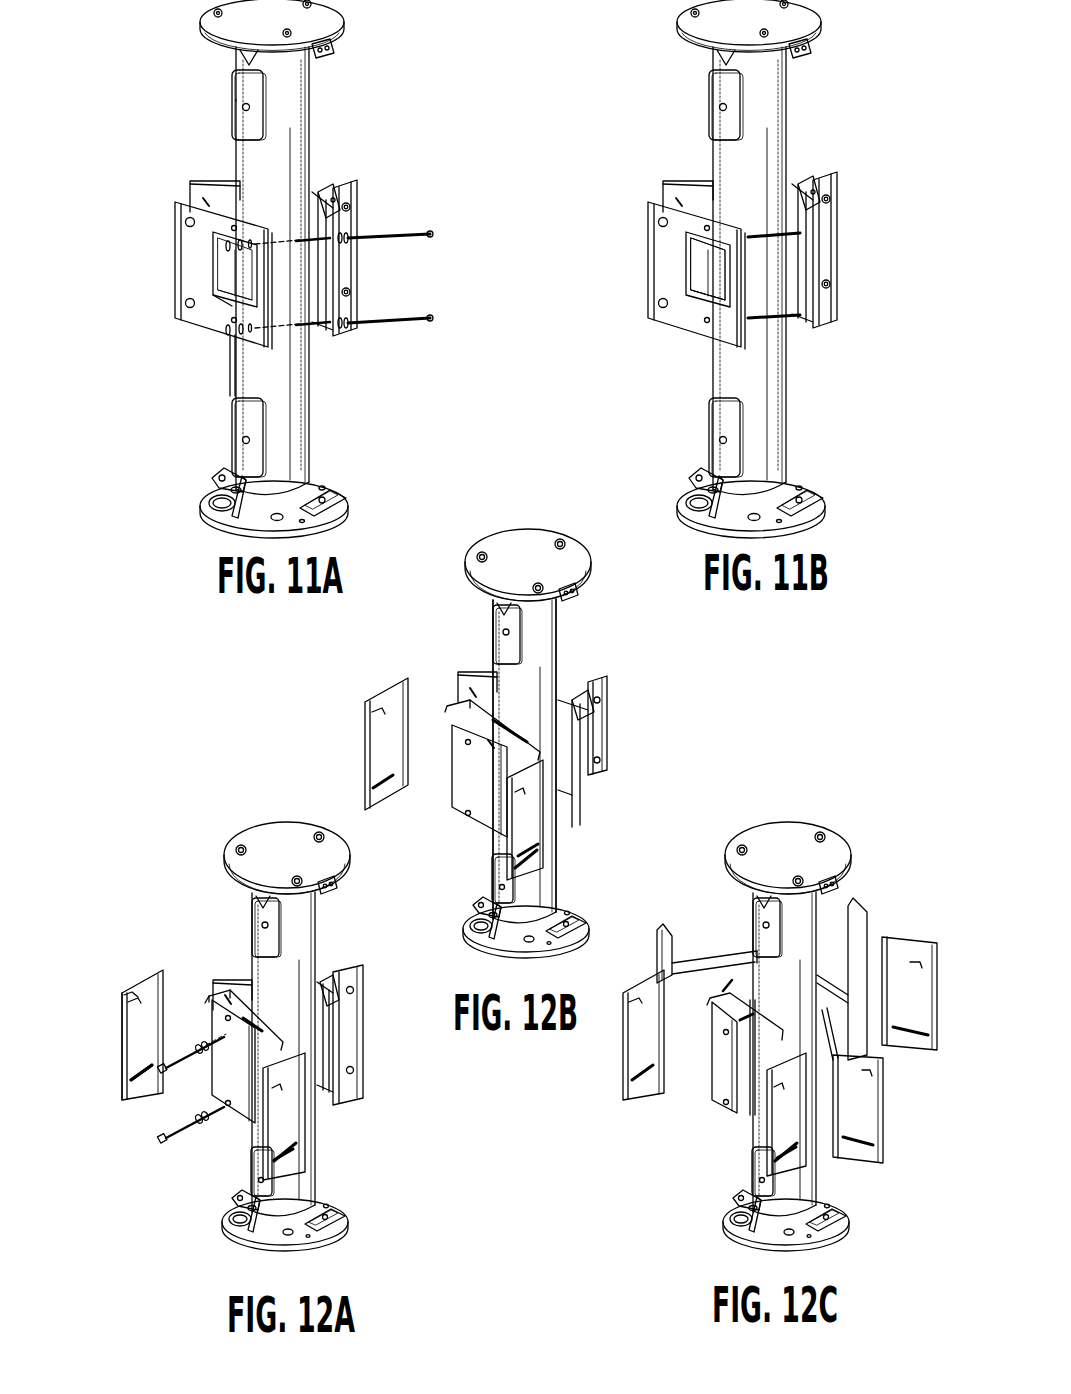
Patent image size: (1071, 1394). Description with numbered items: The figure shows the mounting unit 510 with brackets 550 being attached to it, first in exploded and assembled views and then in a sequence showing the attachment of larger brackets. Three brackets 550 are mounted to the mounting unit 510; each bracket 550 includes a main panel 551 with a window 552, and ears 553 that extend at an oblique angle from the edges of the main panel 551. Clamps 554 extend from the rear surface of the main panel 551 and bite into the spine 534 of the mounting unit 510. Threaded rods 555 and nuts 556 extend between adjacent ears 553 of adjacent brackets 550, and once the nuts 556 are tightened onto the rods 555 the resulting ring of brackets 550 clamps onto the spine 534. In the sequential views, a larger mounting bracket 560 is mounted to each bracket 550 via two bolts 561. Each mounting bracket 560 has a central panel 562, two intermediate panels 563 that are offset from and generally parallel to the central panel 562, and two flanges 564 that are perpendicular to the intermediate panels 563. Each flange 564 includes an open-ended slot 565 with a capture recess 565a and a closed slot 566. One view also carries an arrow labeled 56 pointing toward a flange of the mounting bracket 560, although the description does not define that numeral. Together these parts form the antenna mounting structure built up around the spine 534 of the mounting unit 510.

In FIG. 11A, the mounting unit 510 is at (402, 84).
In FIG. 12B, the spine 534 is at (540, 648).
In FIG. 11A, the bracket 550 is at (233, 190).
In FIG. 12B, the bracket 550 is at (475, 690).
In FIG. 11A, the main panel 551 is at (222, 338).
In FIG. 11A, the window 552 is at (213, 306).
In FIG. 11B, the ear 553 is at (665, 270).
In FIG. 11B, the clamp 554 is at (722, 305).
In FIG. 11A, the threaded rod 555 is at (386, 322).
In FIG. 11B, the threaded rod 555 is at (788, 330).
In FIG. 11A, the nut 556 is at (229, 362).
In FIG. 12B, the mounting bracket 560 is at (465, 790).
In FIG. 12C, the mounting bracket 560 is at (710, 928).
In FIG. 12A, the bolt 561 is at (185, 1072).
In FIG. 12A, the central panel 562 is at (241, 1115).
In FIG. 12A, the intermediate panel 563 is at (186, 1005).
In FIG. 12A, the flange 564 is at (138, 1043).
In FIG. 12A, the open-ended slot 565 is at (125, 1010).
In FIG. 12A, the capture recess 565a is at (136, 1000).
In FIG. 12A, the closed slot 566 is at (135, 1090).
In FIG. 12C, the panel 56 is at (912, 1084).